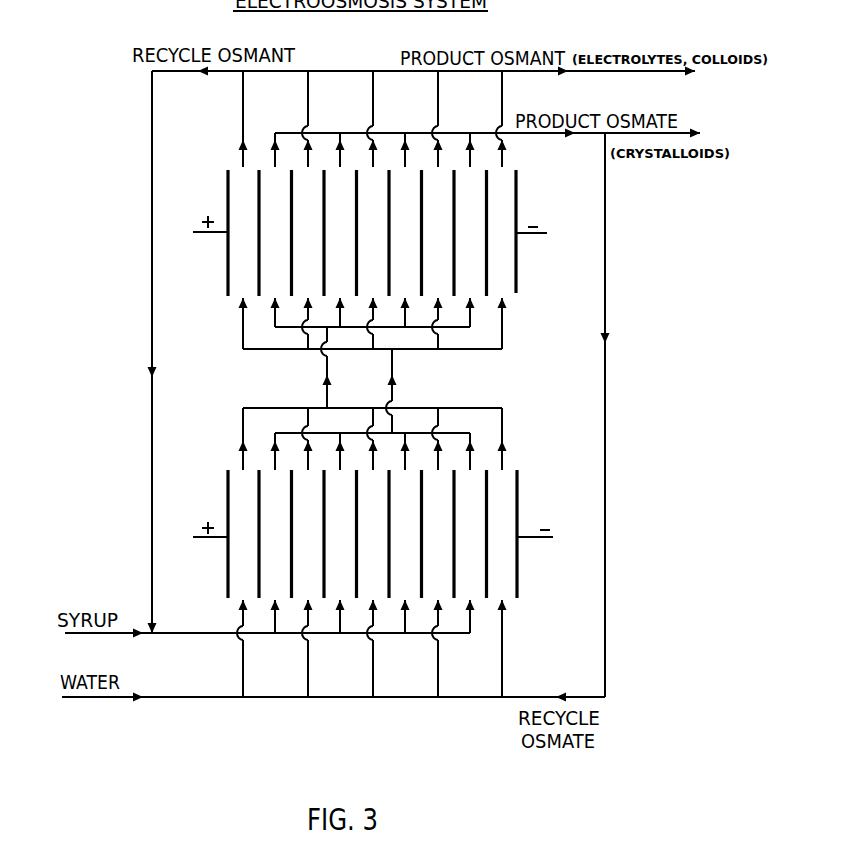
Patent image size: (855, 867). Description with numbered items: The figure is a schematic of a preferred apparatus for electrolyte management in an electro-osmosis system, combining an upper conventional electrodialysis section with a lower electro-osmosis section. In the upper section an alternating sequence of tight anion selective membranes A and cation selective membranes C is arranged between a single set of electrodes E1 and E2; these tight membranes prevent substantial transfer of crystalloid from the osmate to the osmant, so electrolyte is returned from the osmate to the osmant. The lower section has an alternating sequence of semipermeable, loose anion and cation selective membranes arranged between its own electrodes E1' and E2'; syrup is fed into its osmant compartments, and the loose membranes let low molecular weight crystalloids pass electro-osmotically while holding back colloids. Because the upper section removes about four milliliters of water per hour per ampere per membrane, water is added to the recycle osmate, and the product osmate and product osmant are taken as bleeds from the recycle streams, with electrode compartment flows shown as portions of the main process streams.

The electrode E1 is at (218, 221).
The electrode E2 is at (522, 219).
The electrode of electro-osmosis section E1' is at (218, 524).
The electrode of electro-osmosis section E2' is at (523, 524).
The anion selective membrane A is at (356, 221).
The cation selective membrane C is at (389, 221).